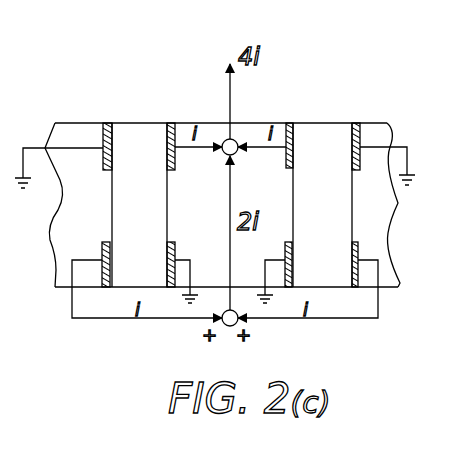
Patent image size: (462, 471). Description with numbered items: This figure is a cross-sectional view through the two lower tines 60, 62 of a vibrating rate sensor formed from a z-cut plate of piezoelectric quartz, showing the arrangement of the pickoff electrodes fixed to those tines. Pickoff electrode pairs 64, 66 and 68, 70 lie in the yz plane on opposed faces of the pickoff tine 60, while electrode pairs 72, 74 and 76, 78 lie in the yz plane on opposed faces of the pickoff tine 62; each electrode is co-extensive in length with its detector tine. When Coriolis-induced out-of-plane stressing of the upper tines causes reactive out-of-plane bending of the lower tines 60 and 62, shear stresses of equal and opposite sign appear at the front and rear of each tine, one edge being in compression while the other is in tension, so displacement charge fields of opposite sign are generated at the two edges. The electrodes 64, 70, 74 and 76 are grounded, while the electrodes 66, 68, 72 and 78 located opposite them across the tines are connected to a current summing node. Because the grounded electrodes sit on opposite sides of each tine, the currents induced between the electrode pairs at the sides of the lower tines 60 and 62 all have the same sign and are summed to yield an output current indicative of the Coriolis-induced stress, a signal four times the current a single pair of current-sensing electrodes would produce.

The lower tine 60 is at (142, 220).
The lower tine 62 is at (324, 220).
The pickoff electrode 64 is at (102, 131).
The pickoff electrode 66 is at (102, 252).
The pickoff electrode 68 is at (178, 127).
The pickoff electrode 70 is at (177, 249).
The pickoff electrode 72 is at (284, 122).
The pickoff electrode 74 is at (285, 249).
The pickoff electrode 76 is at (362, 128).
The pickoff electrode 78 is at (357, 244).